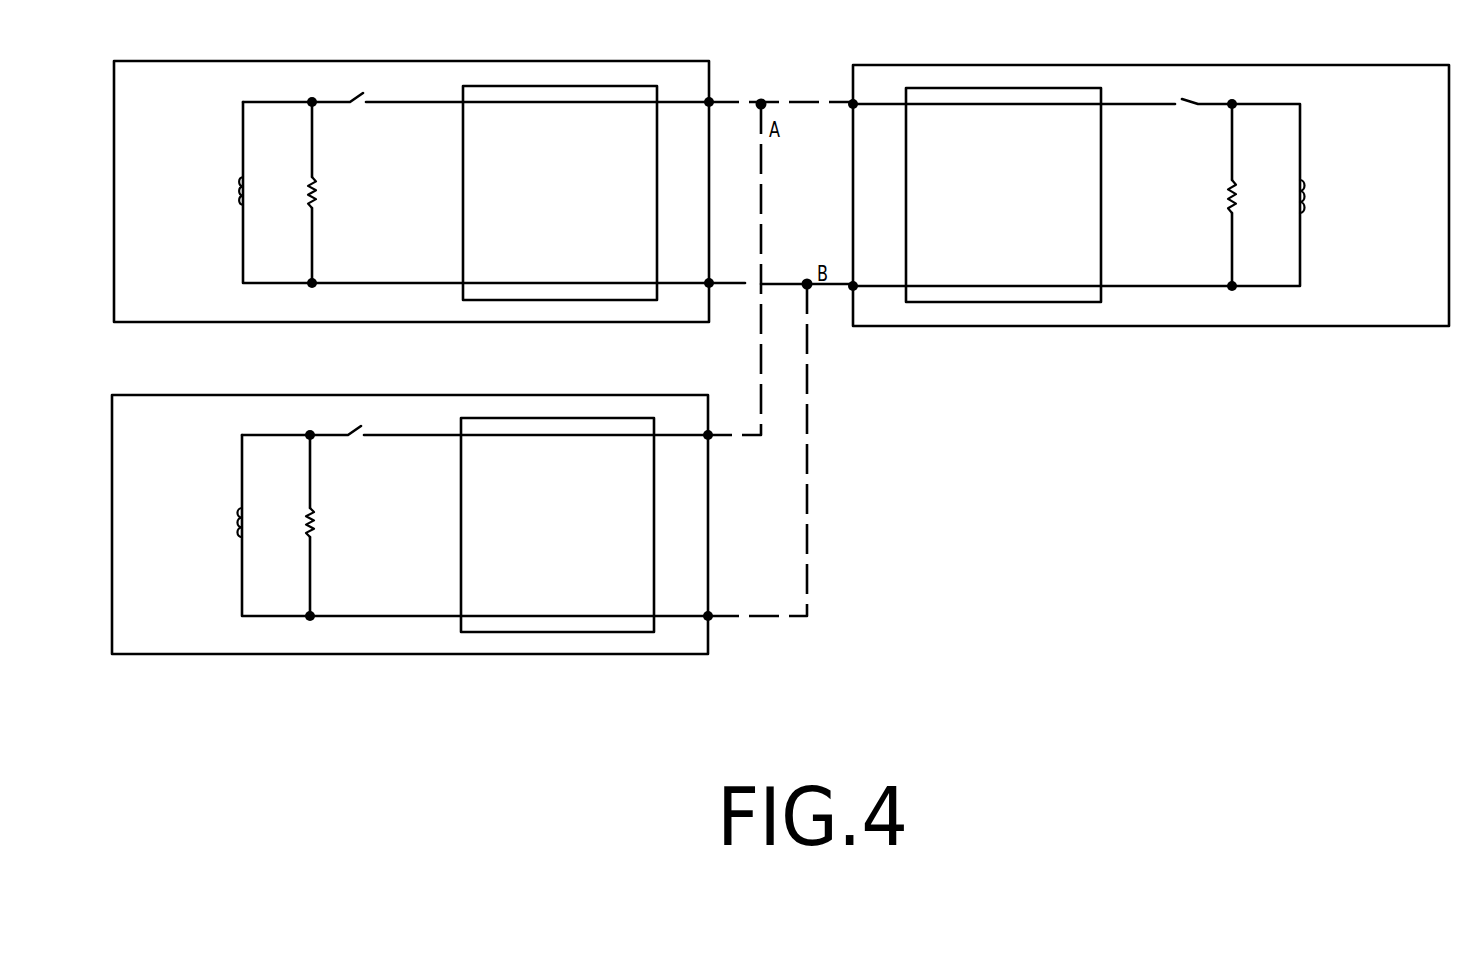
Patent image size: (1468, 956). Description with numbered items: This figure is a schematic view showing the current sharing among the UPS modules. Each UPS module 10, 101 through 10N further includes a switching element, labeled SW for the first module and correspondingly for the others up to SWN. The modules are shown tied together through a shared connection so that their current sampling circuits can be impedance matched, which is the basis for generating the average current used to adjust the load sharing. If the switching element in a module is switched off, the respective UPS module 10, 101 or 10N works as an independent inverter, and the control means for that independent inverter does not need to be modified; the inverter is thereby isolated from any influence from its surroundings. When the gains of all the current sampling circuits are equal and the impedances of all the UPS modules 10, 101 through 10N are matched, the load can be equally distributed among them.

The UPS module 10 is at (267, 66).
The UPS module 101 is at (1163, 320).
The UPS module 10N is at (222, 645).